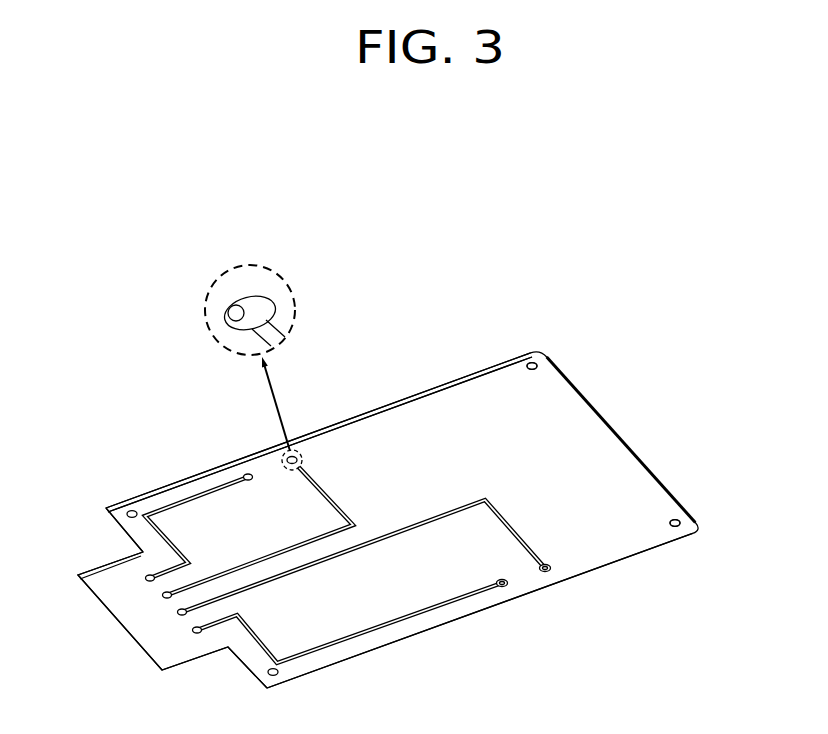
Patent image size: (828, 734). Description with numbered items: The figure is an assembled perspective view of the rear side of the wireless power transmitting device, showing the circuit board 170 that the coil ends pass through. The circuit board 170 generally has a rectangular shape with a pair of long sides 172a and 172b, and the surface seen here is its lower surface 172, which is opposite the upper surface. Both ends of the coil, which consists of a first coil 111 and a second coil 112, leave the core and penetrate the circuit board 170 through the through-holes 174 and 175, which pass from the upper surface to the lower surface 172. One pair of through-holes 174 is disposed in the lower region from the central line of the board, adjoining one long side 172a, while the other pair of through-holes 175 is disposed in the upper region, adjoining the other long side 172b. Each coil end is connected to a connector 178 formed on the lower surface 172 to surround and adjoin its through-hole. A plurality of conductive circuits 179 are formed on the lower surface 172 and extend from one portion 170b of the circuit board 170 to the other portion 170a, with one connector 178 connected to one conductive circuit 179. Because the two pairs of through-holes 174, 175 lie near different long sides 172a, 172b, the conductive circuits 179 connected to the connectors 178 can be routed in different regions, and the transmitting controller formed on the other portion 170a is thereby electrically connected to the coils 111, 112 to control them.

The circuit board 170 is at (405, 653).
The other portion of the circuit board 170a is at (138, 622).
The one portion of the circuit board 170b is at (508, 395).
The lower surface 172 is at (613, 487).
The long side 172a is at (620, 560).
The other long side 172b is at (415, 392).
The first coil 111 is at (545, 570).
The second coil 112 is at (247, 475).
The through-holes 174 is at (502, 586).
The through-holes 175 is at (238, 310).
The connectors 178 is at (265, 305).
The conductive circuits 179 is at (262, 650).